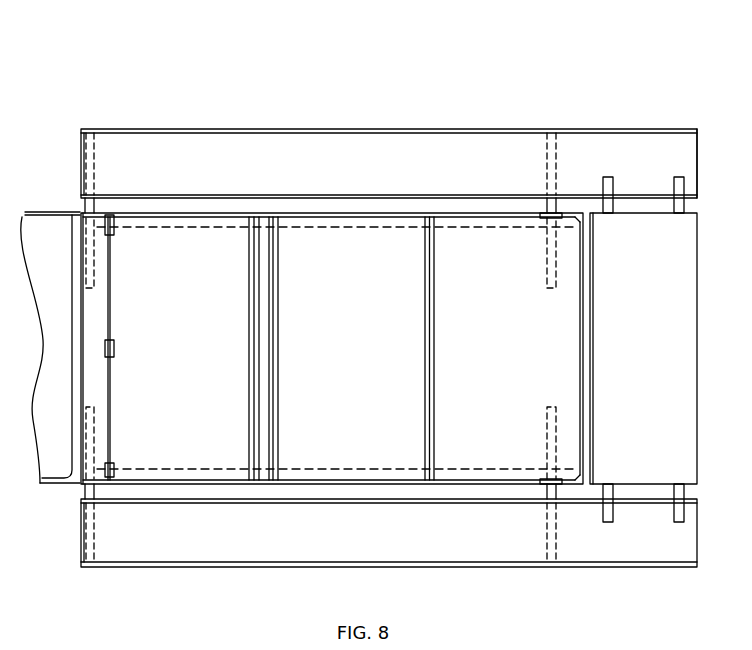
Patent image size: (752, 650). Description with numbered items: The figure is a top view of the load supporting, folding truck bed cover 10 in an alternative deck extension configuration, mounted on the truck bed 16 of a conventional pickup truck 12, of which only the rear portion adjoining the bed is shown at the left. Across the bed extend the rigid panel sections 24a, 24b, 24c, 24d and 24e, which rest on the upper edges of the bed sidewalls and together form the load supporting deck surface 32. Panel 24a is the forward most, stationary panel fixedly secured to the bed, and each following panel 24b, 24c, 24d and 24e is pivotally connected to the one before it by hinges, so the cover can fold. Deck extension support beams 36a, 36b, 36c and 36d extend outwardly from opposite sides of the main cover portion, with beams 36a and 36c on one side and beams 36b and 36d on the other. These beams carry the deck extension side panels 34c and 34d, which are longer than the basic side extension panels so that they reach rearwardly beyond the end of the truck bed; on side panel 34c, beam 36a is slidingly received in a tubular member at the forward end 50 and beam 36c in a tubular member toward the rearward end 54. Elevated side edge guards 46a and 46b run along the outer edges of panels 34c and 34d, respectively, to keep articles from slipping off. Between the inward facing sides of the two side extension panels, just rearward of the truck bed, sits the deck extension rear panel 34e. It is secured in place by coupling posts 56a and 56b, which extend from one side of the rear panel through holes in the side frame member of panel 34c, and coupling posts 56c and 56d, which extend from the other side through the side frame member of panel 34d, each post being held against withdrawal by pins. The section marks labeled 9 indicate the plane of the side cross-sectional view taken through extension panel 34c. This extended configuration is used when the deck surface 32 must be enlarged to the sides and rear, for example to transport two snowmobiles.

The section line for FIG. 9 is at (64, 185).
The truck bed cover 10 is at (412, 68).
The pickup truck 12 is at (52, 212).
The truck bed 16 is at (390, 213).
The panel section 24a is at (110, 305).
The panel section 24b is at (233, 348).
The panel section 24c is at (265, 300).
The panel section 24d is at (412, 328).
The panel section 24e is at (447, 390).
The deck surface 32 is at (168, 446).
The deck extension side panel 34c is at (315, 155).
The deck extension side panel 34d is at (255, 550).
The deck extension rear panel 34e is at (603, 362).
The deck extension support beam 36a is at (80, 222).
The deck extension support beam 36b is at (88, 490).
The deck extension support beam 36c is at (548, 213).
The deck extension support beam 36d is at (548, 487).
The side edge guard 46a is at (193, 131).
The side edge guard 46b is at (444, 568).
The forward end 50 is at (82, 135).
The rearward end 54 is at (697, 131).
The coupling post 56a is at (607, 177).
The coupling post 56b is at (680, 177).
The coupling post 56c is at (607, 524).
The coupling post 56d is at (680, 524).